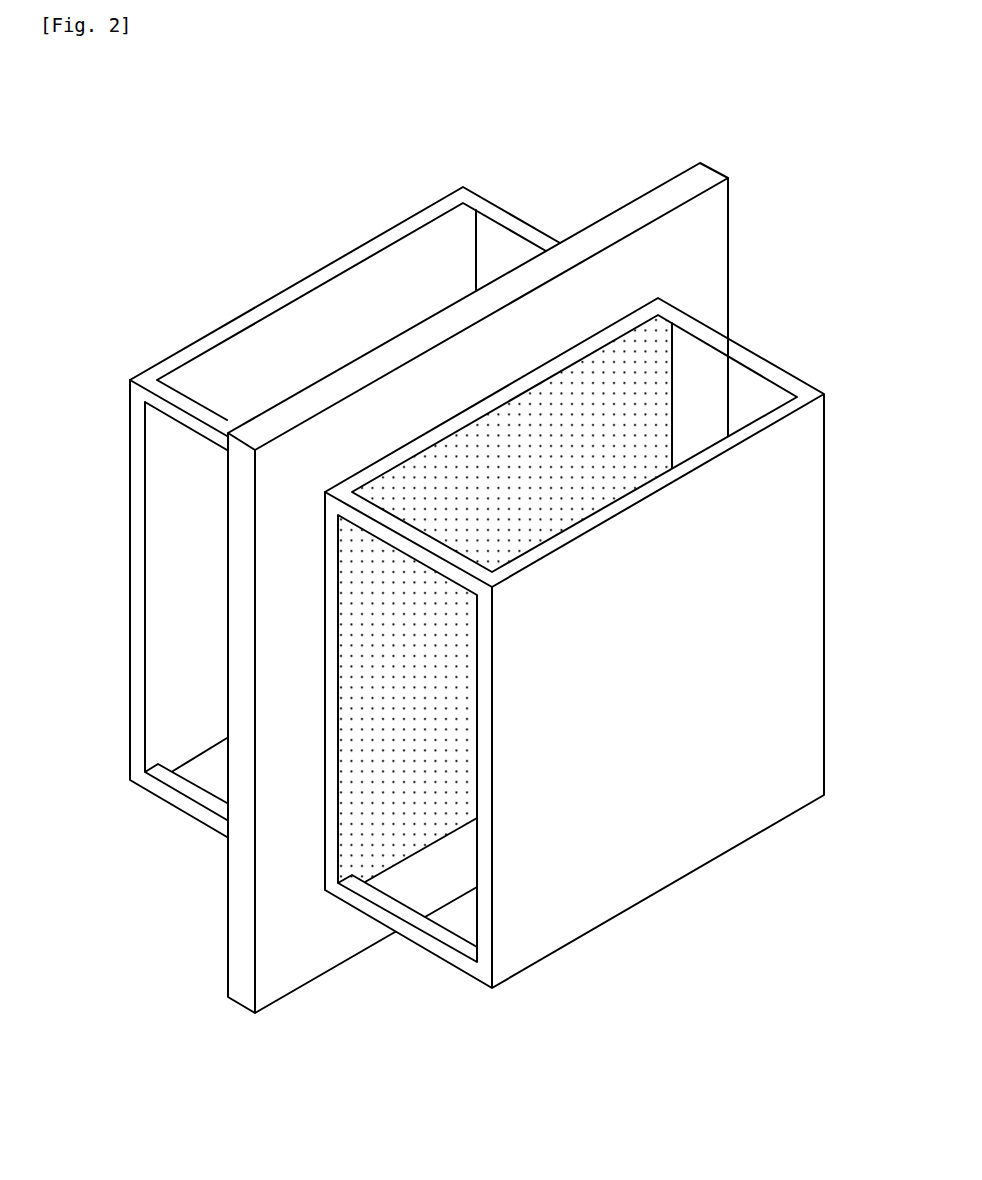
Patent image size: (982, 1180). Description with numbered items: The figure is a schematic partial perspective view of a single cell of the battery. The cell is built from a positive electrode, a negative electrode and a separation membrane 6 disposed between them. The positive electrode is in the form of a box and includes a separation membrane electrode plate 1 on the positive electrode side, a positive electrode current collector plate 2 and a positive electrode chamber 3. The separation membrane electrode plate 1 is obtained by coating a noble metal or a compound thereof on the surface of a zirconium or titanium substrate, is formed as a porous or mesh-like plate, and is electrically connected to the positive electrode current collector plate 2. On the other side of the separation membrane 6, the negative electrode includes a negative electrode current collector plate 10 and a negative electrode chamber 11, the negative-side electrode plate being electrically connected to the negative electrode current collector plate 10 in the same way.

The separation membrane electrode plate on the positive electrode side 1 is at (613, 378).
The positive electrode current collector plate 2 is at (670, 735).
The positive electrode chamber 3 is at (440, 772).
The separation membrane 6 is at (705, 182).
The negative electrode current collector plate 10 is at (342, 312).
The negative electrode chamber 11 is at (212, 668).